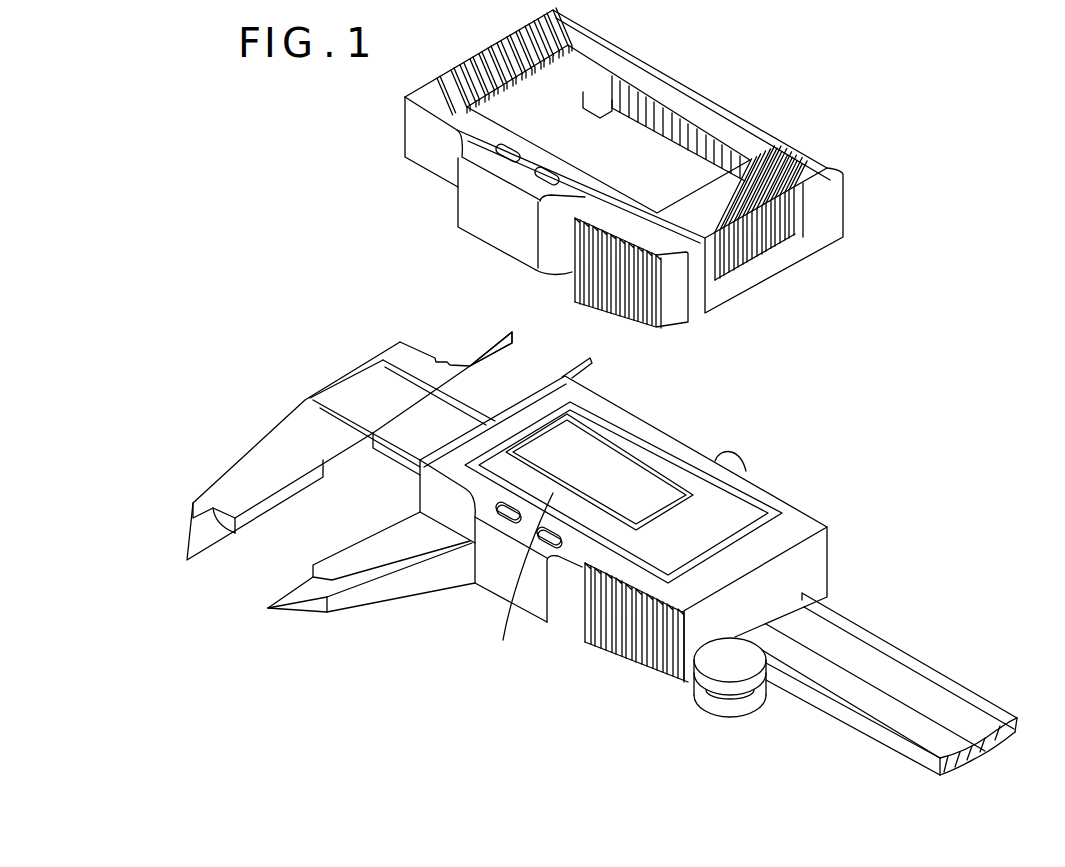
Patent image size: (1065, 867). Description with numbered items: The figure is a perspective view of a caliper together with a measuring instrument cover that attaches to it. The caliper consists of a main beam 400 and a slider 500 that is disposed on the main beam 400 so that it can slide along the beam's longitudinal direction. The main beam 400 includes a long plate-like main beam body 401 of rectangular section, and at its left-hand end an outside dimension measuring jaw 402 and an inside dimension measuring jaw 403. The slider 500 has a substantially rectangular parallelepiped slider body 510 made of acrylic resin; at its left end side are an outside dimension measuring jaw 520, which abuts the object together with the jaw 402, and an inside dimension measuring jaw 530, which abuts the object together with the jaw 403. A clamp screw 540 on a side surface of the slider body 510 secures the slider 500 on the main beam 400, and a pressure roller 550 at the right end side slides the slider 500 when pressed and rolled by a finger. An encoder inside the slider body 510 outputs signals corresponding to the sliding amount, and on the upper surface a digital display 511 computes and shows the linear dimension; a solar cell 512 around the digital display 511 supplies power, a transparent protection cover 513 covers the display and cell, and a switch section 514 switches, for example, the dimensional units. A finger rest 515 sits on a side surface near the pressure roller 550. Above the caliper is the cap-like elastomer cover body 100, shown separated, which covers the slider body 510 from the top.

The cover body 100 is at (762, 98).
The main beam 400 is at (586, 527).
The main beam body 401 is at (857, 722).
The outside dimension measuring jaw 402 is at (198, 494).
The inside dimension measuring jaw 403 is at (504, 330).
The slider 500 is at (579, 565).
The slider body 510 is at (650, 554).
The digital display 511 is at (620, 493).
The solar cell 512 is at (500, 517).
The transparent protection cover 513 is at (705, 552).
The switch section 514 is at (475, 584).
The finger rest 515 is at (618, 688).
The outside dimension measuring jaw 520 is at (350, 597).
The inside dimension measuring jaw 530 is at (596, 355).
The clamp screw 540 is at (744, 462).
The pressure roller 550 is at (728, 715).